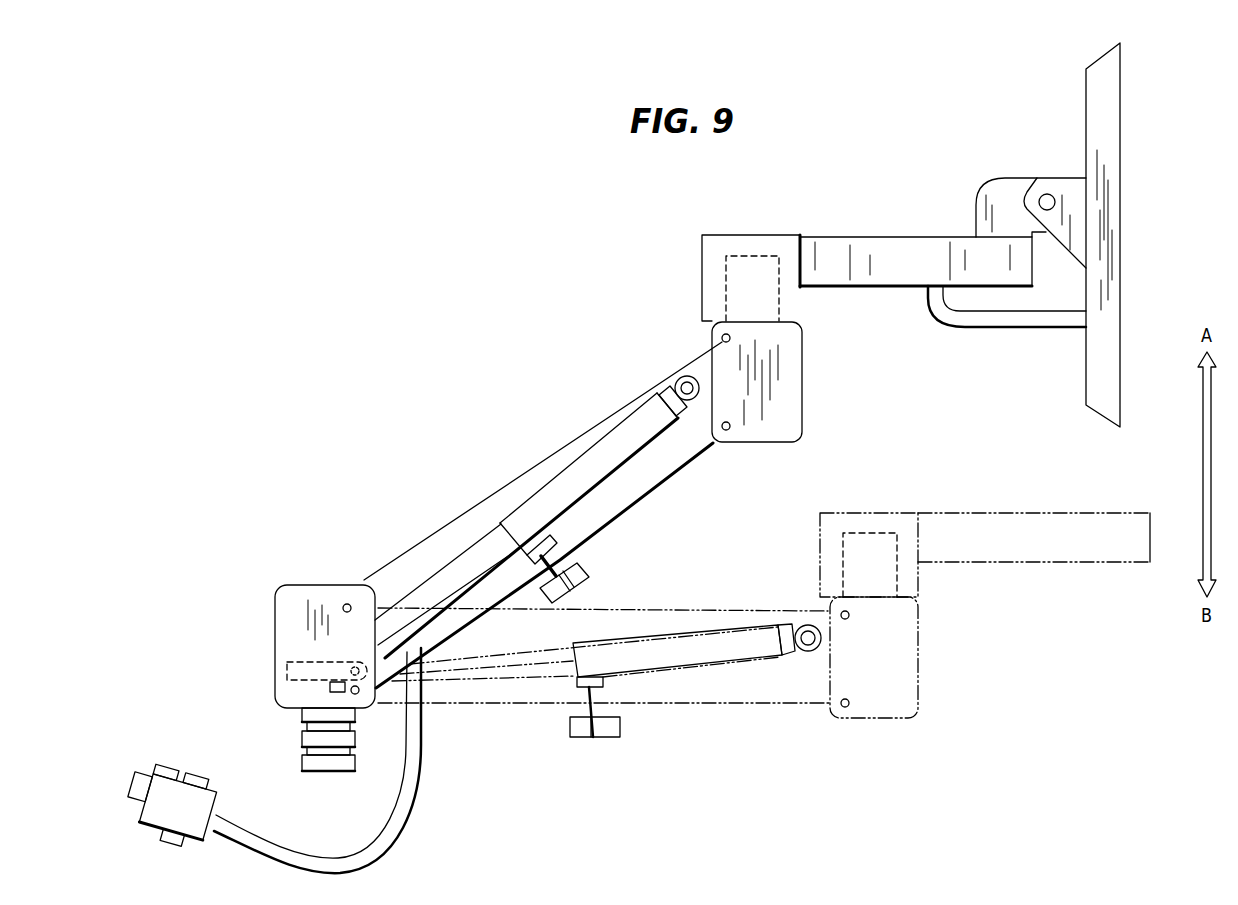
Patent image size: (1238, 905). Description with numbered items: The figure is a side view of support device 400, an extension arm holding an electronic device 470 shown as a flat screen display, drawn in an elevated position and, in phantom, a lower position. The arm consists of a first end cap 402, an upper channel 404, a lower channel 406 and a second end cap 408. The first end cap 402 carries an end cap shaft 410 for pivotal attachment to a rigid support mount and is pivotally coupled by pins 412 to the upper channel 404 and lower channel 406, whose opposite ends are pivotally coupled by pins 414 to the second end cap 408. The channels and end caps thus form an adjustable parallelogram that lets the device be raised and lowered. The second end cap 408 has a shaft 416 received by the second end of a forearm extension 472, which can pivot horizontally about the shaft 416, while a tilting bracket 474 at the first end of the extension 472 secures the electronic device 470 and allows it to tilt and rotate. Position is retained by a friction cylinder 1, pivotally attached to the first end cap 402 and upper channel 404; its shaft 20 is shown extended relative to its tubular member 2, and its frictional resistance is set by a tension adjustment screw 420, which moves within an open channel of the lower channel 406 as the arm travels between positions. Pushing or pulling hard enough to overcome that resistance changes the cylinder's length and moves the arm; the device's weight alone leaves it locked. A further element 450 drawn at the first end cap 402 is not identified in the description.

The support device 400 is at (410, 460).
The first end cap 402 is at (276, 612).
The upper channel 404 is at (493, 492).
The lower channel 406 is at (657, 490).
The second end cap 408 is at (802, 362).
The end cap shaft 410 is at (300, 712).
The pins 412 is at (345, 604).
The pins 414 is at (721, 337).
The shaft 416 is at (702, 268).
The tension adjustment screw 420 is at (592, 566).
The hidden recess 450 is at (285, 667).
The peripheral electronic device 470 is at (1120, 125).
The forearm extension 472 is at (896, 222).
The tilting bracket 474 is at (1008, 186).
The friction cylinder 1 is at (562, 460).
The tubular member 2 is at (613, 447).
The shaft 20 is at (450, 590).